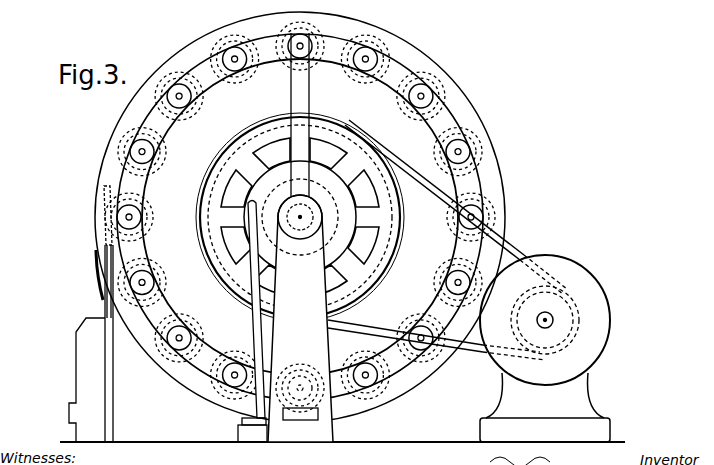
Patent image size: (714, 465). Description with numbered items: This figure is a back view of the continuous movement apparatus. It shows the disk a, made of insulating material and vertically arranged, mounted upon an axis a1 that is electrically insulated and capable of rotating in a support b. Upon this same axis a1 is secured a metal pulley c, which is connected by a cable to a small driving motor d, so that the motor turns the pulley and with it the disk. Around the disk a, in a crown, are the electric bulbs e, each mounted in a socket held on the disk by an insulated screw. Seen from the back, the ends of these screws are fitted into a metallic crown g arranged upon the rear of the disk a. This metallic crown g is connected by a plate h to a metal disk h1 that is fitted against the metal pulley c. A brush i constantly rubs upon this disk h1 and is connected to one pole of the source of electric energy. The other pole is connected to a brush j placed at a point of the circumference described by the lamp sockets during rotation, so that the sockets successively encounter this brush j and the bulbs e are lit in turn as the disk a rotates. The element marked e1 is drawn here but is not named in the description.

The disk a is at (424, 62).
The axis a1 is at (300, 228).
The support b is at (300, 318).
The metal pulley c is at (394, 239).
The driving motor d is at (545, 348).
The electric bulbs e is at (239, 76).
The belt e1 is at (382, 331).
The metallic crown g is at (140, 193).
The plate h is at (302, 90).
The metal disk h1 is at (333, 233).
The brush i is at (256, 225).
The brush j is at (110, 185).